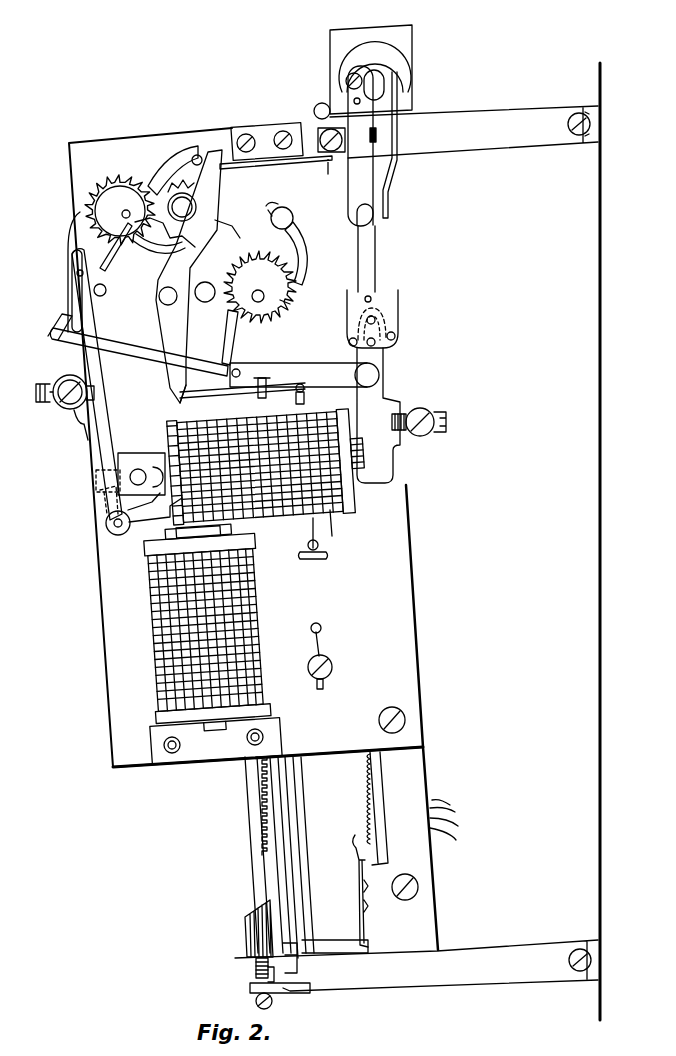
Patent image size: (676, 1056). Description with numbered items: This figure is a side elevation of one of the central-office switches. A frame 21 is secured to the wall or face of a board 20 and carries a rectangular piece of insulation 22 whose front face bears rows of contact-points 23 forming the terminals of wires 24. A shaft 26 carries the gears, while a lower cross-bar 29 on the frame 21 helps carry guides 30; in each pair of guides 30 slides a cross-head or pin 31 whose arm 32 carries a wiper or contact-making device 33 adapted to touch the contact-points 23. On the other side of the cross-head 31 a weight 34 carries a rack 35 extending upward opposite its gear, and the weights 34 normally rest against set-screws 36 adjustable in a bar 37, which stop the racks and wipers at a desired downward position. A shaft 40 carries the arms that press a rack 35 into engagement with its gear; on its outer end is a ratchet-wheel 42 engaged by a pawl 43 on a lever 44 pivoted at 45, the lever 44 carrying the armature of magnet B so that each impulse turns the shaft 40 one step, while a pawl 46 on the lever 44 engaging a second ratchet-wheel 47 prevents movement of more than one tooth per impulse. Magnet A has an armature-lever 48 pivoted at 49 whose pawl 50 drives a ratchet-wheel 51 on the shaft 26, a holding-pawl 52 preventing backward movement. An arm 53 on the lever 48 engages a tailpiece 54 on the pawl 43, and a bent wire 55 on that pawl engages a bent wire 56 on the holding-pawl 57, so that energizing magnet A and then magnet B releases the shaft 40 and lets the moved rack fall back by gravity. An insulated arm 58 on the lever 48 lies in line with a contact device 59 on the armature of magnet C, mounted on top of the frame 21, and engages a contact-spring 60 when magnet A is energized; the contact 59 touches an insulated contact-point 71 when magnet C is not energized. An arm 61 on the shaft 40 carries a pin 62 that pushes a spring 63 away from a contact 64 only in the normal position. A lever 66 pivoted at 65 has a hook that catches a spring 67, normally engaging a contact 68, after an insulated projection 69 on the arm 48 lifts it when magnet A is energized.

The wall or face of a board 20 is at (603, 328).
The frame 21 is at (427, 753).
The rectangular piece of insulation 22 is at (380, 779).
The contact-points 23 is at (365, 798).
The wires 24 is at (446, 815).
The shaft 26 is at (260, 287).
The cross-bar 29 is at (297, 993).
The guides 30 is at (290, 912).
The cross-head or pin 31 is at (298, 966).
The arm 32 is at (372, 946).
The wiper or contact-making device 33 is at (358, 872).
The weight 34 is at (244, 940).
The rack 35 is at (248, 837).
The set-screws 36 is at (254, 975).
The bar 37 is at (250, 992).
The shaft 40 is at (121, 201).
The ratchet-wheel 42 is at (70, 258).
The pawl 43 is at (108, 288).
The lever 44 is at (98, 430).
The pivot 45 is at (106, 528).
The pawl 46 is at (68, 240).
The ratchet-wheel 47 is at (110, 176).
The armature-lever 48 is at (398, 455).
The pivot 49 is at (380, 376).
The pawl 50 is at (222, 343).
The ratchet-wheel 51 is at (290, 305).
The holding-pawl 52 is at (300, 262).
The arm 53 is at (153, 356).
The tailpiece 54 is at (62, 322).
The bent wire 55 is at (127, 256).
The bent wire 56 is at (147, 229).
The holding-pawl 57 is at (214, 228).
The arm 58 is at (398, 302).
The contact device 59 is at (357, 196).
The contact-spring 60 is at (398, 184).
The arm 61 is at (163, 170).
The pin 62 is at (195, 159).
The spring 63 is at (240, 168).
The contact device or spring 64 is at (232, 132).
The pivot 65 is at (160, 300).
The lever 66 is at (175, 384).
The spring 67 is at (232, 396).
The contact 68 is at (260, 399).
The projection 69 is at (290, 403).
The contact-point 71 is at (312, 122).
The magnet A is at (338, 520).
The magnet B is at (152, 645).
The magnet C is at (413, 44).